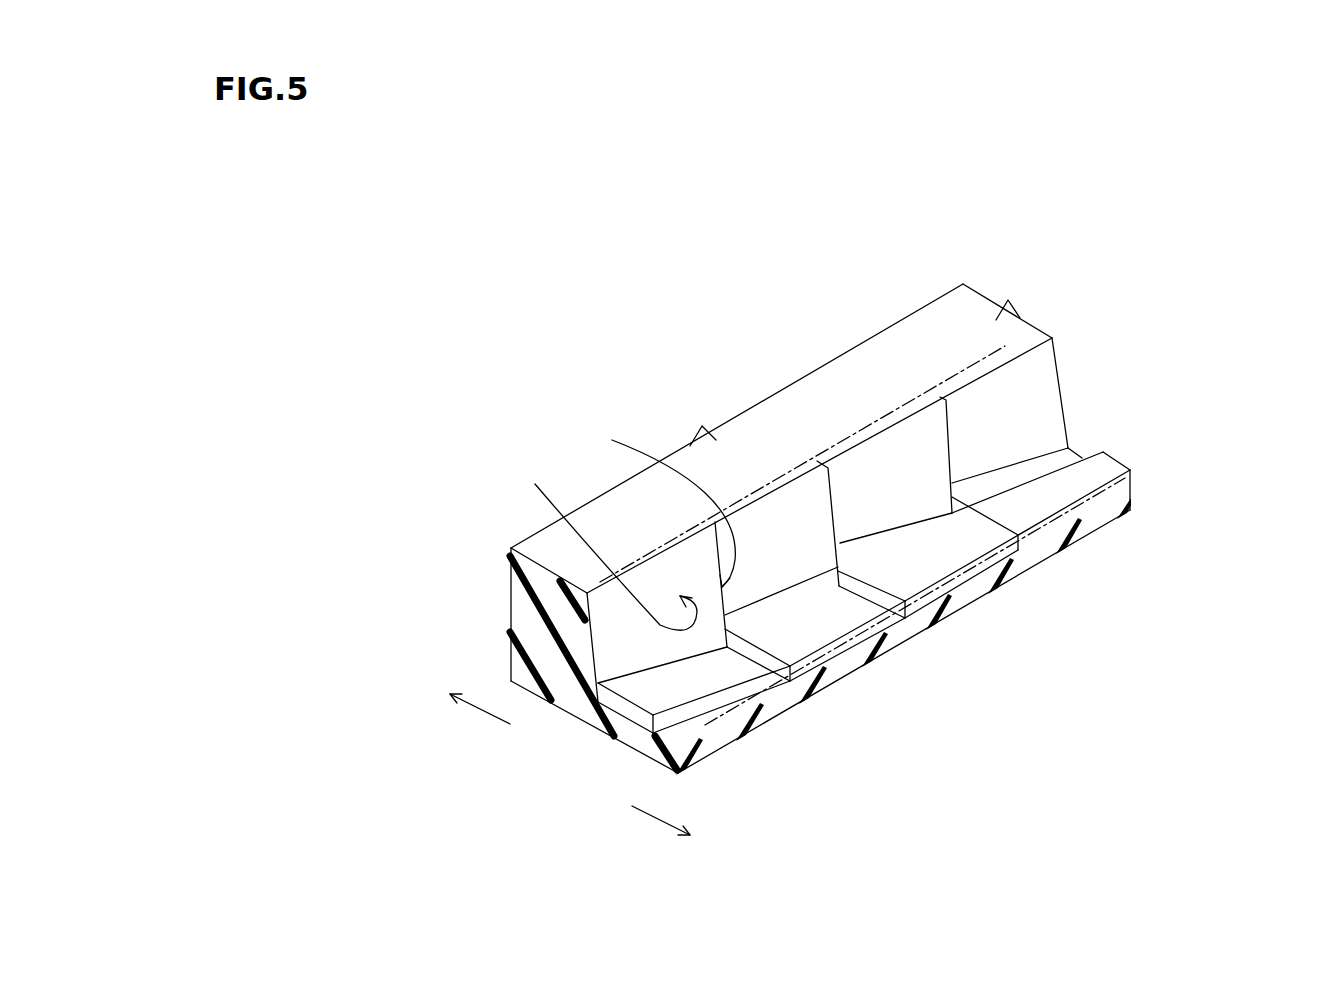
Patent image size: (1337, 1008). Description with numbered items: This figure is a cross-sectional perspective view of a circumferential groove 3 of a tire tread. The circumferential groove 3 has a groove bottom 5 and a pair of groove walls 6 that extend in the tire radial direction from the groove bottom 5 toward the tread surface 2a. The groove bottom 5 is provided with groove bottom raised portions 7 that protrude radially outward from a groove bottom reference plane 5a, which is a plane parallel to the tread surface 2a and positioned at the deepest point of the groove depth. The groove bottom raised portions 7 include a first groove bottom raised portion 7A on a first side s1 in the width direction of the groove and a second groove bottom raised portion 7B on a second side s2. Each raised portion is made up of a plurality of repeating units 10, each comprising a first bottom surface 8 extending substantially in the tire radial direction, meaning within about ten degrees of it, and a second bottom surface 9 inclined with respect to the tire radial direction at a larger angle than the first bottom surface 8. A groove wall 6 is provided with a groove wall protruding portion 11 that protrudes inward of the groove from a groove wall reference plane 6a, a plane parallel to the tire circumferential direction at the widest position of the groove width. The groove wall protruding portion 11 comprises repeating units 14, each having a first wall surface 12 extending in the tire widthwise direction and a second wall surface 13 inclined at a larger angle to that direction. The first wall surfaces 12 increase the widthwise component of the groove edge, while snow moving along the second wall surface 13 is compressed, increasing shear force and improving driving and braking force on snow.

The tread surface 2a is at (950, 330).
The circumferential groove 3 is at (1130, 392).
The groove bottom 5 is at (750, 680).
The groove bottom reference plane 5a is at (848, 654).
The groove wall 6 is at (1012, 398).
The groove wall reference plane 6a is at (777, 478).
The groove bottom raised portion 7 is at (1256, 410).
The first groove bottom raised portion 7A is at (1097, 474).
The second groove bottom raised portion 7B is at (1030, 478).
The first bottom surface 8 is at (852, 585).
The second bottom surface 9 is at (885, 563).
The repeating unit 10 is at (827, 268).
The groove wall protruding portion 11 is at (921, 402).
The first wall surface 12 is at (656, 500).
The second wall surface 13 is at (598, 543).
The repeating unit 14 is at (610, 420).
The first side s1 is at (660, 825).
The second side s2 is at (480, 720).